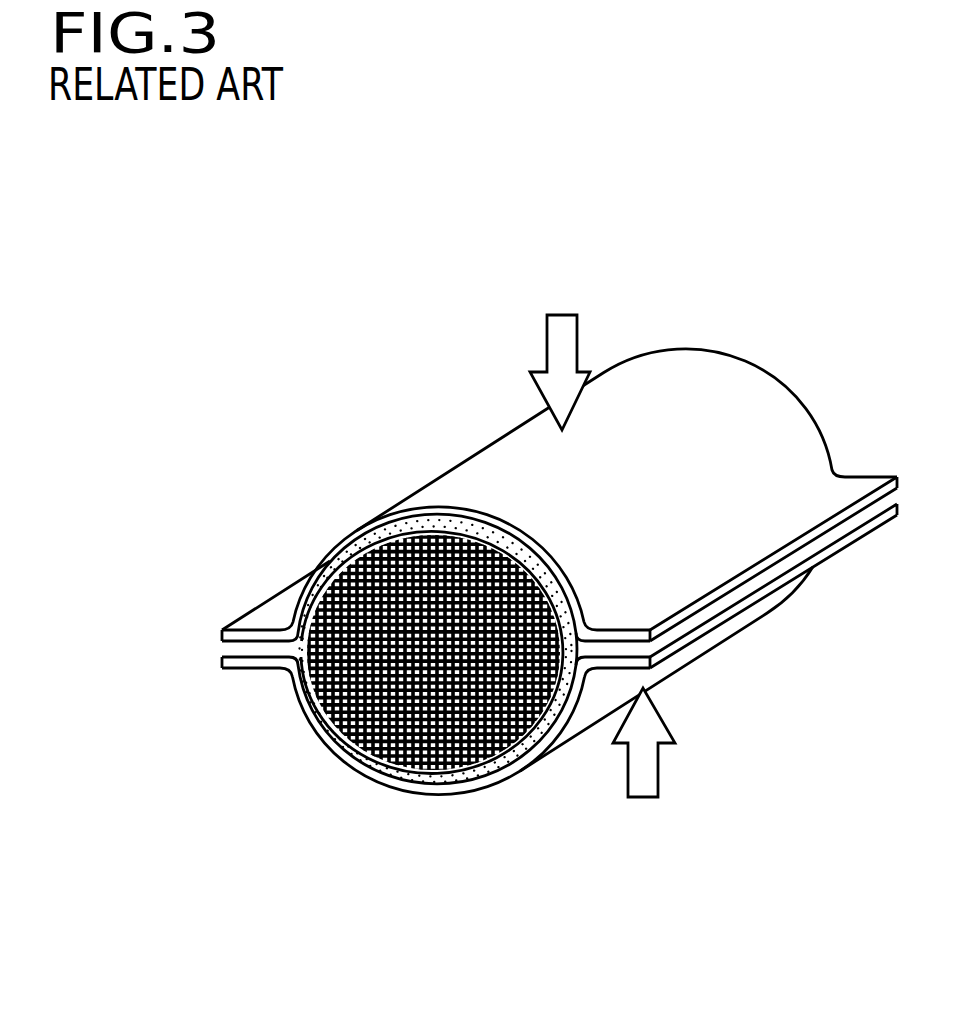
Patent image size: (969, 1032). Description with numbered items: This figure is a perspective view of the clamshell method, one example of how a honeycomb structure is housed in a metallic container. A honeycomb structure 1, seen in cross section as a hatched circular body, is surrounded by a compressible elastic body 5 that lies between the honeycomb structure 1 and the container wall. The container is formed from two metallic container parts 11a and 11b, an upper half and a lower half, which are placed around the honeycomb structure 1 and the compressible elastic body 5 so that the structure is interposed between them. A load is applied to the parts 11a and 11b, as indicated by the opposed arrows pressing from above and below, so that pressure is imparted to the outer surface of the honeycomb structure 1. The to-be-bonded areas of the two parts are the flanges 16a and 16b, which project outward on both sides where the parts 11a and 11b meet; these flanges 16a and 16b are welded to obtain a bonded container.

The honeycomb structure 1 is at (457, 763).
The compressible elastic body B 5 is at (405, 772).
The metallic container part 11a is at (490, 478).
The metallic container part 11b is at (298, 722).
The flange (to-be-bonded area) 16a is at (228, 647).
The flange (to-be-bonded area) 16b is at (712, 628).